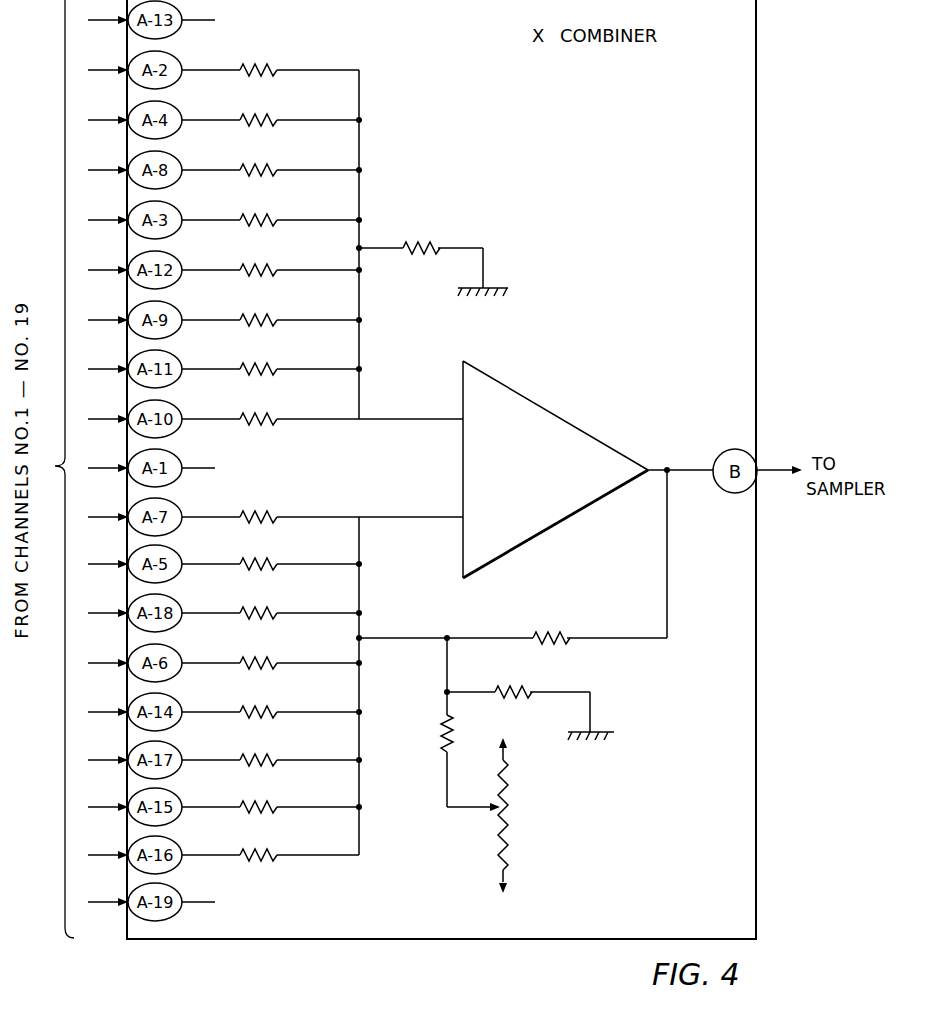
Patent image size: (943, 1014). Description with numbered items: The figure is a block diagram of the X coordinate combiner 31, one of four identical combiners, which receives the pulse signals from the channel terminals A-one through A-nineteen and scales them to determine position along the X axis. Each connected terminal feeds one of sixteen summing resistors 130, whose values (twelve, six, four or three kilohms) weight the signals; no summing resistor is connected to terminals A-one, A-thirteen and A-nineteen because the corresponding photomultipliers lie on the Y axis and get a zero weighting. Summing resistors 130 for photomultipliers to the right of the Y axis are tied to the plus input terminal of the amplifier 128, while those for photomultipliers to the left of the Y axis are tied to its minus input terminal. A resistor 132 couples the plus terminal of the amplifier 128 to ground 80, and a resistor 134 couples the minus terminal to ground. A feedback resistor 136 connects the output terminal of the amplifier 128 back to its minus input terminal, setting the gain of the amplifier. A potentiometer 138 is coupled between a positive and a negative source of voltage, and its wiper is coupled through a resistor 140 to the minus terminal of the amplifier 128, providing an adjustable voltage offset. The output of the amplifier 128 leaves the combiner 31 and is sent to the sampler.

The X coordinate combiner 31 is at (756, 208).
The summing resistors 130 is at (386, 189).
The resistor 132 is at (431, 244).
The ground 80 is at (505, 296).
The amplifier 128 is at (553, 410).
The feedback resistor 136 is at (538, 636).
The resistor 134 is at (518, 690).
The resistor 140 is at (446, 731).
The potentiometer 138 is at (510, 798).